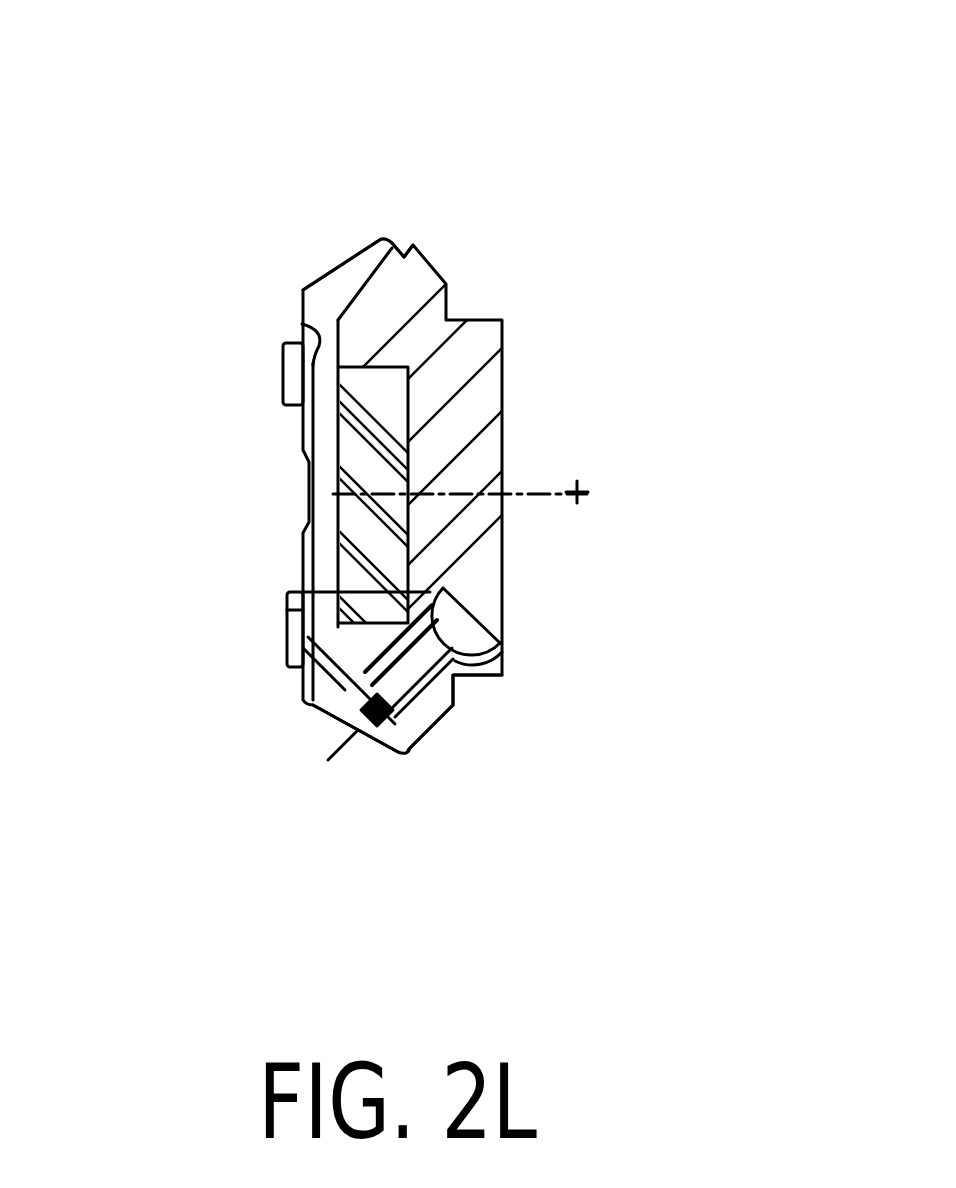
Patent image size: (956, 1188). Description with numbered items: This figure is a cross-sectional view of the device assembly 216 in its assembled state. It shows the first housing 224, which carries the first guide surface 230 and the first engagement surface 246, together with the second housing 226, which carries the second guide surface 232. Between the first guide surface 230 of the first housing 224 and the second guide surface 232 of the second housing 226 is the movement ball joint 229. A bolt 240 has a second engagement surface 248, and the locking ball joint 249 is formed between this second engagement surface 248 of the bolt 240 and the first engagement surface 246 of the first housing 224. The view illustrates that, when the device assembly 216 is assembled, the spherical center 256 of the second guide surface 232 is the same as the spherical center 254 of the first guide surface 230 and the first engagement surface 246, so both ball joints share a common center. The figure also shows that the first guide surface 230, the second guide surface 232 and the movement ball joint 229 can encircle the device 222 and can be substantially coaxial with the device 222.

The device assembly 216 is at (404, 188).
The movement ball joint 229 is at (342, 289).
The first guide surface 230 is at (367, 286).
The second guide surface 232 is at (320, 332).
The device 222 is at (358, 447).
The second engagement surface 248 is at (303, 592).
The spherical center 256 is at (580, 490).
The spherical center 254 is at (577, 497).
The bolt 240 is at (500, 623).
The locking ball joint 249 is at (520, 654).
The first engagement surface 246 is at (458, 680).
The first housing 224 is at (433, 737).
The second housing 226 is at (307, 713).